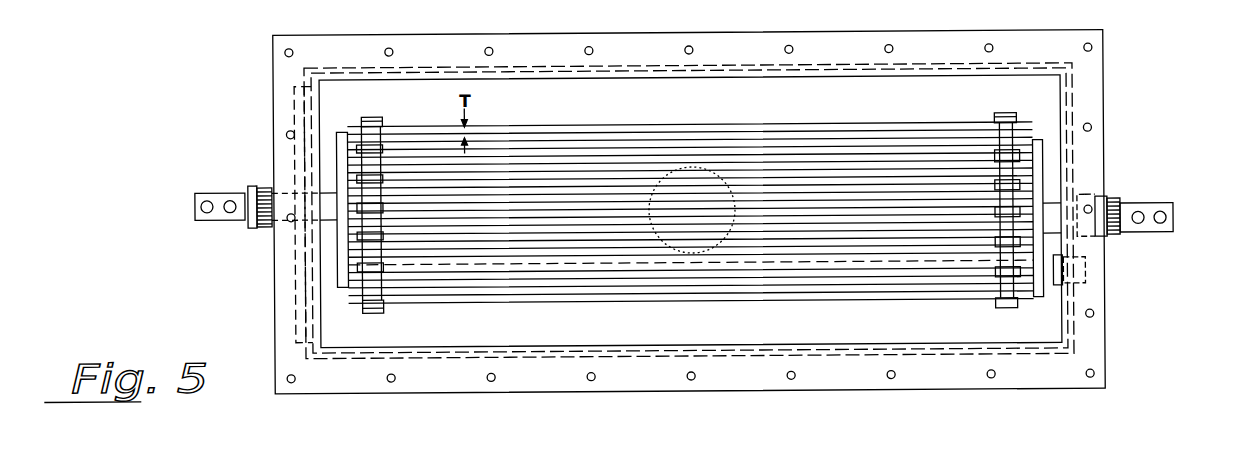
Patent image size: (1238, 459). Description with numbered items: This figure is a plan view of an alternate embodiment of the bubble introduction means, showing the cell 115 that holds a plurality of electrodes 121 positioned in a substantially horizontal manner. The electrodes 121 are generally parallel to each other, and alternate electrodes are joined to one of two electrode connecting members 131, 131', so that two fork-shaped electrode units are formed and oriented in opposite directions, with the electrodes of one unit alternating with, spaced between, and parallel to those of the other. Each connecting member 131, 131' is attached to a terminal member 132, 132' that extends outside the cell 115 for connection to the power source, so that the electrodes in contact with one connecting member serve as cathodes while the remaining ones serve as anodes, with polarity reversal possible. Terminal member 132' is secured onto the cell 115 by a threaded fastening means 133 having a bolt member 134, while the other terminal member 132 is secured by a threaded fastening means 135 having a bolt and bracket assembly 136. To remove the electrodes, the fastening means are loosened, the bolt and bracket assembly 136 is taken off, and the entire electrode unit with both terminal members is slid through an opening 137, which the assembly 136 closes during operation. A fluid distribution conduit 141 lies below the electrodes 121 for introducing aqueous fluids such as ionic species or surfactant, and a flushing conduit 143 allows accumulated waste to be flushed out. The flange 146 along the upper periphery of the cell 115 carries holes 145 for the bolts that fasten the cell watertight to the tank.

The cell 115 is at (1073, 81).
The electrodes 121 is at (833, 126).
The electrode connecting member 131 is at (277, 184).
The electrode connecting member 131' is at (1010, 284).
The terminal member 132 is at (216, 238).
The terminal member 132' is at (1161, 245).
The threaded fastening means 133 is at (1113, 241).
The bolt member 134 is at (1077, 196).
The threaded fastening means 135 is at (262, 227).
The bolt and bracket assembly 136 is at (295, 174).
The opening 137 is at (308, 157).
The fluid distribution conduit 141 is at (1056, 292).
The flushing conduit 143 is at (690, 167).
The holes 145 is at (1093, 130).
The flange 146 is at (1105, 96).